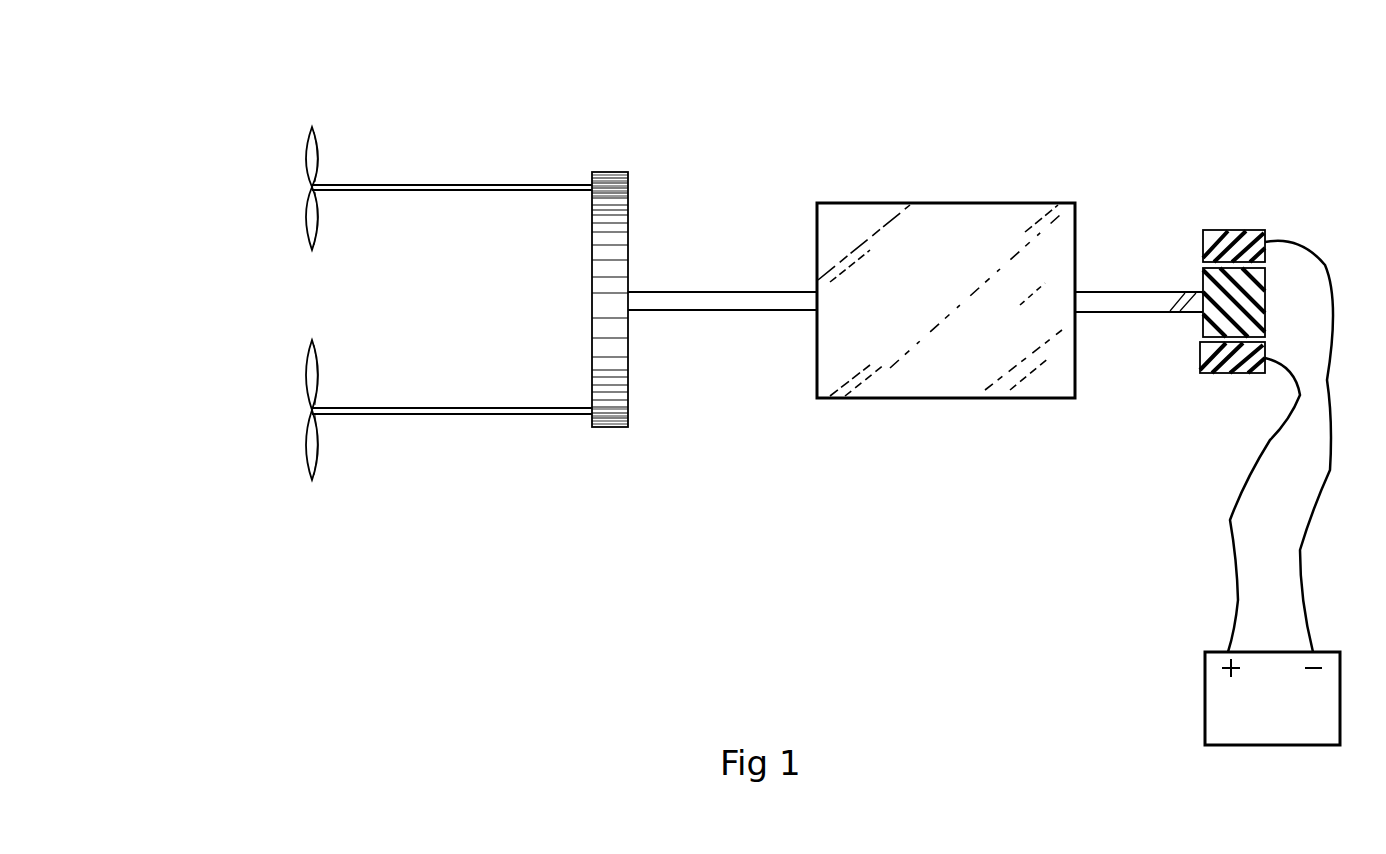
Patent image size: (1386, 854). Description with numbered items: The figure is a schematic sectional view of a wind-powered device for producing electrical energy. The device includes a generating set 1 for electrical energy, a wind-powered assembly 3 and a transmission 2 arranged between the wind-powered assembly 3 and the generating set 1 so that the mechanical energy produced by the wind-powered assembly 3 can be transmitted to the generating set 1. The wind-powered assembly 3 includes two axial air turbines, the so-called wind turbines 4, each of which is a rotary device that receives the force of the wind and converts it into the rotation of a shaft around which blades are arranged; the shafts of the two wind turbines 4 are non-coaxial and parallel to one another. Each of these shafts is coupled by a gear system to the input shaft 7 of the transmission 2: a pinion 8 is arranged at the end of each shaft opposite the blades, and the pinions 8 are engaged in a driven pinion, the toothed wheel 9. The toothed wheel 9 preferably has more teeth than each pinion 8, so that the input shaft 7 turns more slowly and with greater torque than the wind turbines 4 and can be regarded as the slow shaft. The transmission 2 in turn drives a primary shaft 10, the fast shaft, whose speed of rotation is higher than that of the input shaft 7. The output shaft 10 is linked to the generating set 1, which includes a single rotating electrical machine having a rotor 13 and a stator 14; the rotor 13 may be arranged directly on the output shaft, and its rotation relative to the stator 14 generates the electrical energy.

The generating set 1 is at (1197, 442).
The transmission 2 is at (897, 478).
The wind-powered assembly 3 is at (487, 463).
The wind turbine 4 is at (270, 372).
The input shaft 7 is at (697, 300).
The pinion 8 is at (610, 178).
The toothed wheel 9 is at (612, 270).
The primary shaft 10 is at (1125, 290).
The rotor 13 is at (1210, 325).
The stator 14 is at (1245, 238).